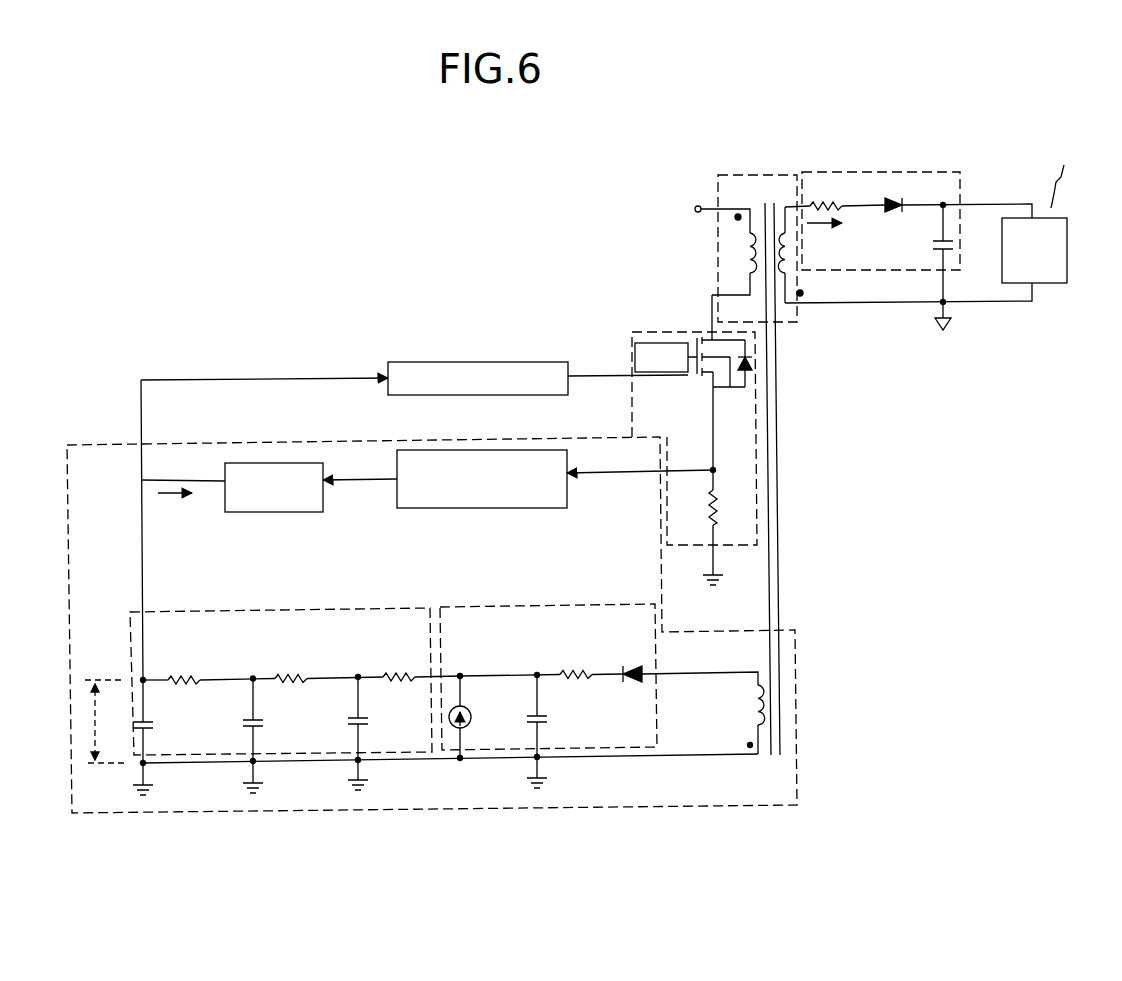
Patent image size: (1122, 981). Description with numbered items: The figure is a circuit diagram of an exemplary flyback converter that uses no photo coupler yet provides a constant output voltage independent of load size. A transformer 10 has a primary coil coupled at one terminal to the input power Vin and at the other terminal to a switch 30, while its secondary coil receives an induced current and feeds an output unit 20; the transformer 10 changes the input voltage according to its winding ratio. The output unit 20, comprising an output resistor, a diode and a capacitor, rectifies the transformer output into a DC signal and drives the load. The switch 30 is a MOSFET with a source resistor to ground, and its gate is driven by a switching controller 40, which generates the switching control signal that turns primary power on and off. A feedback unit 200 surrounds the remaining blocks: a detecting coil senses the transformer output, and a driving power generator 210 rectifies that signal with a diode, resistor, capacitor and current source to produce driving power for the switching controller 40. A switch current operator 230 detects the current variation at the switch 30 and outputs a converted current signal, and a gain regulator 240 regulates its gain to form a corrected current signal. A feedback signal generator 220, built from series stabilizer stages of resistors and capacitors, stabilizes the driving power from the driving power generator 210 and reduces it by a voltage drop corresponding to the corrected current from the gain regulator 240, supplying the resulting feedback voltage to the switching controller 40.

The transformer 10 is at (737, 175).
The output unit 20 is at (876, 172).
The switch 30 is at (654, 332).
The switching controller 40 is at (409, 362).
The feedback unit 200 is at (793, 653).
The driving power generator 210 is at (530, 603).
The feedback signal generator 220 is at (237, 610).
The switch current operator 230 is at (490, 512).
The gain regulator 240 is at (267, 513).